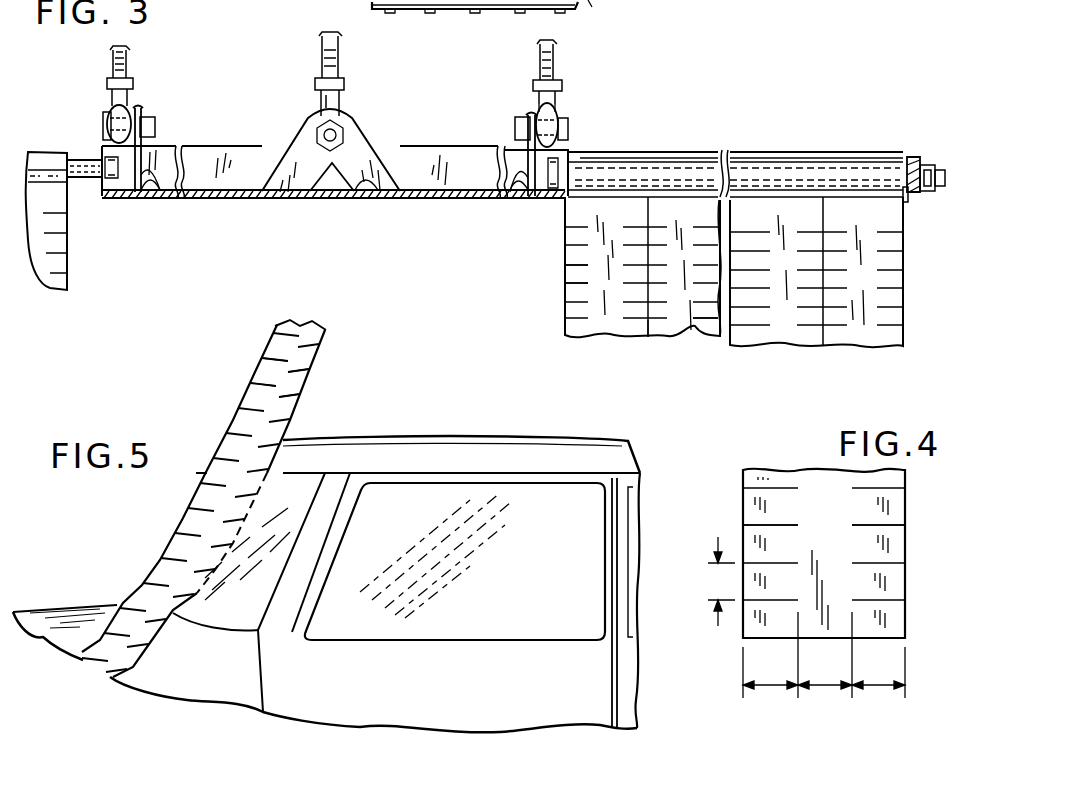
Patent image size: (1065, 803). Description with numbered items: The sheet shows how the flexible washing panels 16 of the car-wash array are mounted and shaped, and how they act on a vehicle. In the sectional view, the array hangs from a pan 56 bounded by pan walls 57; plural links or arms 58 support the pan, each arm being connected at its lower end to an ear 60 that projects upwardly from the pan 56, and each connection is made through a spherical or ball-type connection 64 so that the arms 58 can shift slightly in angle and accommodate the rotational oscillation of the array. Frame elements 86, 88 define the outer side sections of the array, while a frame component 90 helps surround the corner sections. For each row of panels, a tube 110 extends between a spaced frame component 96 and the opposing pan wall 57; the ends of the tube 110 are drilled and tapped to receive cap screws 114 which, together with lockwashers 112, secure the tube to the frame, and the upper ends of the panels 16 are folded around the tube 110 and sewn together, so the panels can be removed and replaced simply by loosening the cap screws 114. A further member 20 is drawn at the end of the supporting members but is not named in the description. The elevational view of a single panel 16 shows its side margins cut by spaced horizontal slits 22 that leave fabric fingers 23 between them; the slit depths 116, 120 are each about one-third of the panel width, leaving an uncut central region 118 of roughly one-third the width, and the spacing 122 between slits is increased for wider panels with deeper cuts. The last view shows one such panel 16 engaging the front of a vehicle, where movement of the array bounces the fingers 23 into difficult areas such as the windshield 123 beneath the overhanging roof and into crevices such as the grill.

In FIG. 3, the washing panel 16 is at (603, 334).
In FIG. 5, the washing panel 16 is at (300, 325).
In FIG. 4, the washing panel 16 is at (803, 470).
In FIG. 3, the support tube 20 is at (45, 150).
In FIG. 3, the slits 22 is at (700, 330).
In FIG. 5, the slits 22 is at (317, 377).
In FIG. 4, the slits 22 is at (902, 593).
In FIG. 3, the fabric fingers 23 is at (567, 291).
In FIG. 5, the fabric fingers 23 is at (300, 412).
In FIG. 4, the fabric fingers 23 is at (865, 538).
In FIG. 3, the pan 56 is at (432, 197).
In FIG. 3, the pan wall 57 is at (216, 147).
In FIG. 3, the arm 58 is at (130, 53).
In FIG. 3, the ear 60 is at (162, 194).
In FIG. 3, the ball-type connection 64 is at (548, 113).
In FIG. 3, the frame element 86 is at (451, 12).
In FIG. 3, the frame element 88 is at (588, 0).
In FIG. 3, the frame component 90 is at (827, 155).
In FIG. 3, the frame component 96 is at (913, 157).
In FIG. 3, the tube 110 is at (905, 195).
In FIG. 3, the lockwasher 112 is at (924, 164).
In FIG. 3, the cap screw 114 is at (931, 192).
In FIG. 4, the slit depth 116 is at (773, 687).
In FIG. 4, the central region 118 is at (828, 687).
In FIG. 4, the slit depth 120 is at (882, 687).
In FIG. 4, the slit spacing 122 is at (712, 580).
In FIG. 5, the windshield 123 is at (297, 473).